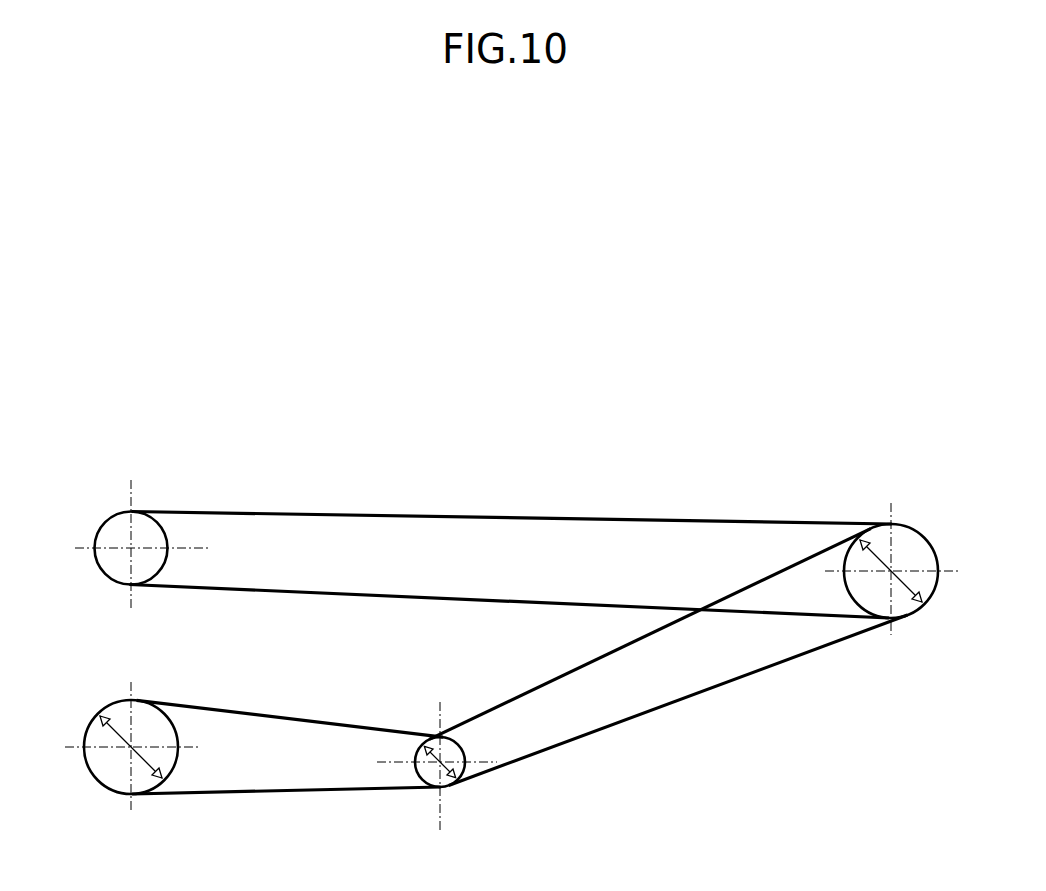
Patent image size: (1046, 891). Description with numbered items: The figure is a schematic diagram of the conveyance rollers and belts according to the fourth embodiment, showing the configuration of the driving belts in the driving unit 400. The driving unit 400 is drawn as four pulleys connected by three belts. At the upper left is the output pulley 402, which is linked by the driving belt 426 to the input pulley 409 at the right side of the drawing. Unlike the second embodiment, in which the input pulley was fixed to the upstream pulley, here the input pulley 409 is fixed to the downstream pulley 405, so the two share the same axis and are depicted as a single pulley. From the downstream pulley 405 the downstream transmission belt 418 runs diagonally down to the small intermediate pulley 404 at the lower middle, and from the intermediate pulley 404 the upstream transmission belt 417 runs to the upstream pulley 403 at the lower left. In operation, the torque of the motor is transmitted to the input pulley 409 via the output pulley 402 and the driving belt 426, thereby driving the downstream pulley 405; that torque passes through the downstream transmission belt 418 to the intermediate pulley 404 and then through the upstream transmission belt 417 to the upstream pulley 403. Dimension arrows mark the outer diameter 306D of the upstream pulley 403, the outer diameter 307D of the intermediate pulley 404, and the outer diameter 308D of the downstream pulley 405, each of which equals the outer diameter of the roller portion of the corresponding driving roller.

The driving unit 400 is at (446, 450).
The output pulley 402 is at (138, 532).
The upstream pulley 403 is at (97, 763).
The intermediate pulley 404 is at (430, 772).
The downstream pulley 405 is at (868, 540).
The input pulley 409 is at (880, 540).
The upstream transmission belt 417 is at (312, 720).
The downstream transmission belt 418 is at (490, 710).
The driving belt 426 is at (402, 597).
The outer diameter 306D is at (145, 765).
The outer diameter 307D is at (460, 745).
The outer diameter 308D is at (870, 557).